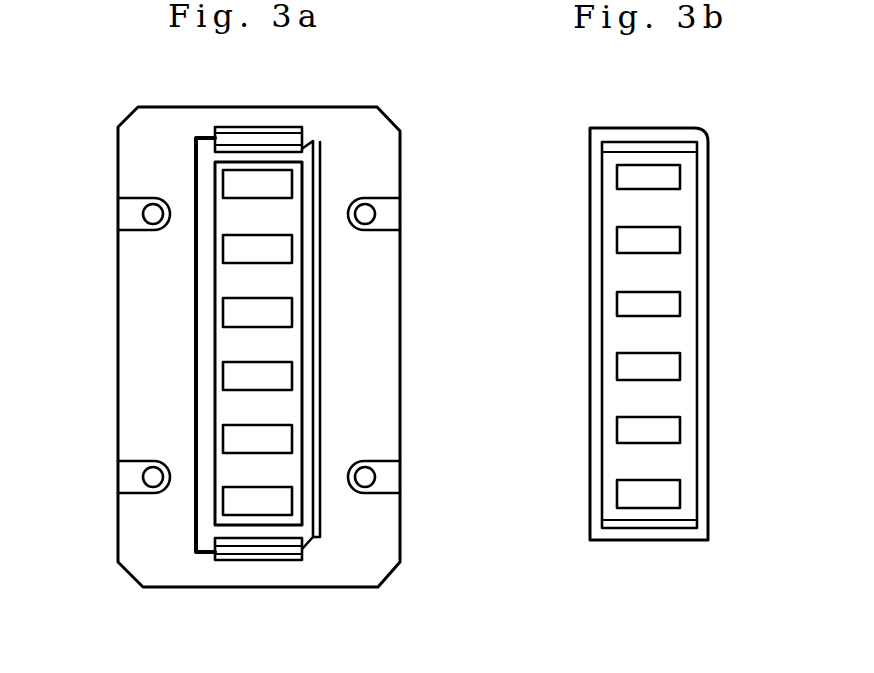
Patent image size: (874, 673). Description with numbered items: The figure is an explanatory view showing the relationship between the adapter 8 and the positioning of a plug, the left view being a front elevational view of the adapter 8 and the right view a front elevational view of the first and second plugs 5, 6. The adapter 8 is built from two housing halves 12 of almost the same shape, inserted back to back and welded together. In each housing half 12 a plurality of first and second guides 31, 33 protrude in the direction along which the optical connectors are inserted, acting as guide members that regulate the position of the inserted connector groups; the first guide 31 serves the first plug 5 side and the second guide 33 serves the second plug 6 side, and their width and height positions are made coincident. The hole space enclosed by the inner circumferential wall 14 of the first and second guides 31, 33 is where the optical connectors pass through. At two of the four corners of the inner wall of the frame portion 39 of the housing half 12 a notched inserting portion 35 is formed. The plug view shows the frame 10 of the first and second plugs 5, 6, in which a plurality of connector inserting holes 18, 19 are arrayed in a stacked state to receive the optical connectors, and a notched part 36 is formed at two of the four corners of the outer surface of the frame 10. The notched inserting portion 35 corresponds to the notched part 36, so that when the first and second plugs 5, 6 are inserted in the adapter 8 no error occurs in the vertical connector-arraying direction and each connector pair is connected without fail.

In FIG. 3A, the housing half 12 is at (393, 124).
In FIG. 3A, the frame portion 39 is at (196, 170).
In FIG. 3A, the notched inserting portion 35 is at (305, 143).
In FIG. 3A, the adapter 8 is at (412, 532).
In FIG. 3A, the first guide 31 is at (373, 338).
In FIG. 3A, the second guide 33 is at (295, 208).
In FIG. 3A, the inner circumferential wall 14 is at (282, 263).
In FIG. 3B, the frame 10 is at (617, 128).
In FIG. 3B, the notched part 36 is at (700, 131).
In FIG. 3B, the connector inserting hole 18 is at (724, 332).
In FIG. 3B, the connector inserting hole 19 is at (680, 180).
In FIG. 3B, the first plug 5 is at (668, 332).
In FIG. 3B, the second plug 6 is at (668, 332).